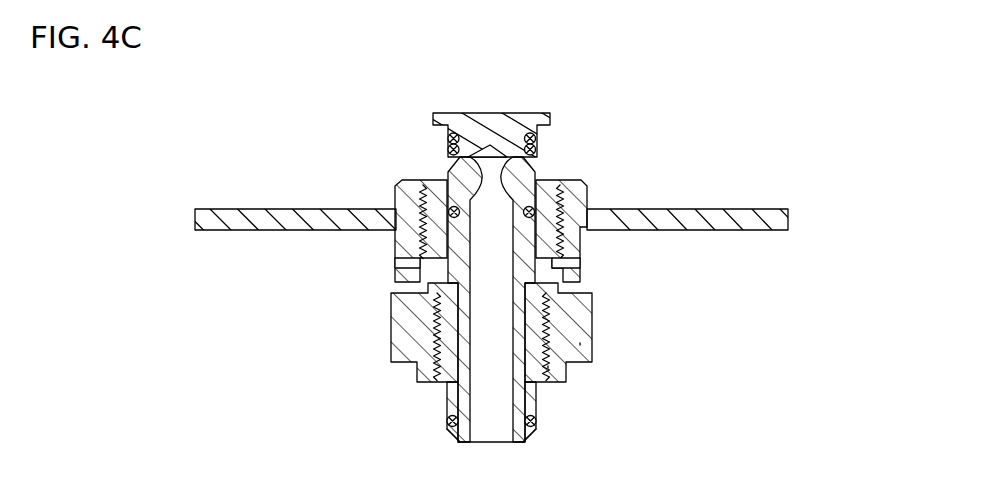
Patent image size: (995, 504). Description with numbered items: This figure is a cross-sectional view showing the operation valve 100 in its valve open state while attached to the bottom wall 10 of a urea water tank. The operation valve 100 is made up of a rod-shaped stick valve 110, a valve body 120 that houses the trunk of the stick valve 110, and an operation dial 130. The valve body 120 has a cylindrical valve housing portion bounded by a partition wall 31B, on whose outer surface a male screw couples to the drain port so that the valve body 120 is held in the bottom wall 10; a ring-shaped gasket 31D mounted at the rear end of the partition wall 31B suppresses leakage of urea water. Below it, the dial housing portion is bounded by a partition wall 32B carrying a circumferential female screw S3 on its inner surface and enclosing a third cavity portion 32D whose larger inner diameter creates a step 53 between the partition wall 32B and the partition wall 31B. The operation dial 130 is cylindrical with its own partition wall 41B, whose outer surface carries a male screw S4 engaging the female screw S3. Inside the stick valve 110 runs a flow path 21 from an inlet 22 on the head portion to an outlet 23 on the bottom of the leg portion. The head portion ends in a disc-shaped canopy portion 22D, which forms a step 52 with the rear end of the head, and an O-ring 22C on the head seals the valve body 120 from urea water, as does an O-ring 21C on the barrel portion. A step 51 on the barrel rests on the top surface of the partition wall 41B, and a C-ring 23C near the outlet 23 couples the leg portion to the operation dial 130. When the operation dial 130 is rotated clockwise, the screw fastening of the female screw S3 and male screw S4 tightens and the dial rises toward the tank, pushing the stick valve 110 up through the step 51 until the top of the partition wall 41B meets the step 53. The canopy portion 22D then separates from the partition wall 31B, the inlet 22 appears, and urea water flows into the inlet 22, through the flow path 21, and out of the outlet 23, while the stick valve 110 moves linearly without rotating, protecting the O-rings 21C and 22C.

The bottom wall 10 is at (728, 208).
The operation valve 100 is at (562, 268).
The stick valve 110 is at (504, 108).
The valve body 120 is at (461, 344).
The operation dial 130 is at (552, 427).
The flow path 21 is at (506, 324).
The O-ring 21C is at (589, 194).
The inlet 22 is at (452, 154).
The O-ring 22C is at (540, 143).
The canopy portion 22D is at (546, 121).
The outlet 23 is at (490, 444).
The C-ring 23C is at (450, 428).
The partition wall 31B is at (404, 190).
The gasket 31D is at (586, 268).
The partition wall 32B is at (425, 380).
The third cavity portion 32D is at (574, 310).
The partition wall 41B is at (428, 298).
The step 51 is at (438, 292).
The step 52 is at (444, 134).
The step 53 is at (566, 287).
The female screw S3 is at (582, 344).
The male screw S4 is at (548, 368).